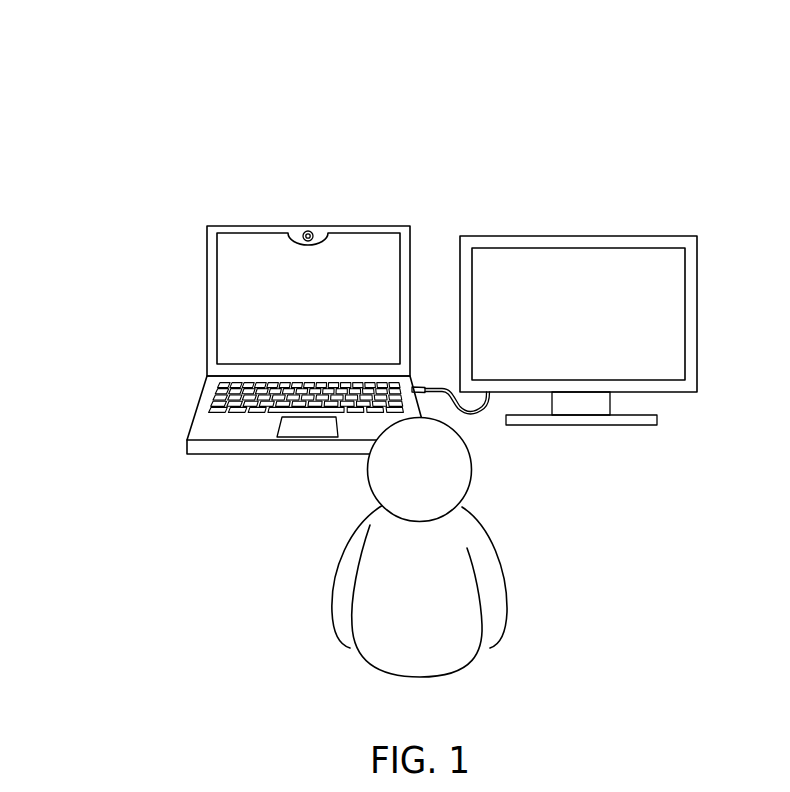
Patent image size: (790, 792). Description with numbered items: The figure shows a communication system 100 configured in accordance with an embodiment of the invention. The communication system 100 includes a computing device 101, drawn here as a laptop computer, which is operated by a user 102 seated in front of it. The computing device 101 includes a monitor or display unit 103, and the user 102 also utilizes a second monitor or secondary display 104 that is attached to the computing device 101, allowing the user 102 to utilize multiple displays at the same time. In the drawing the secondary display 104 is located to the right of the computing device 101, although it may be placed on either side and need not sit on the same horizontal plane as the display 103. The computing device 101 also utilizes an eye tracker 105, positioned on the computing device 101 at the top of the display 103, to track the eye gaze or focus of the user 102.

The communication system 100 is at (125, 112).
The computing device 101 is at (207, 272).
The user 102 is at (332, 571).
The display unit 103 is at (362, 248).
The secondary display 104 is at (651, 258).
The eye tracker 105 is at (304, 229).